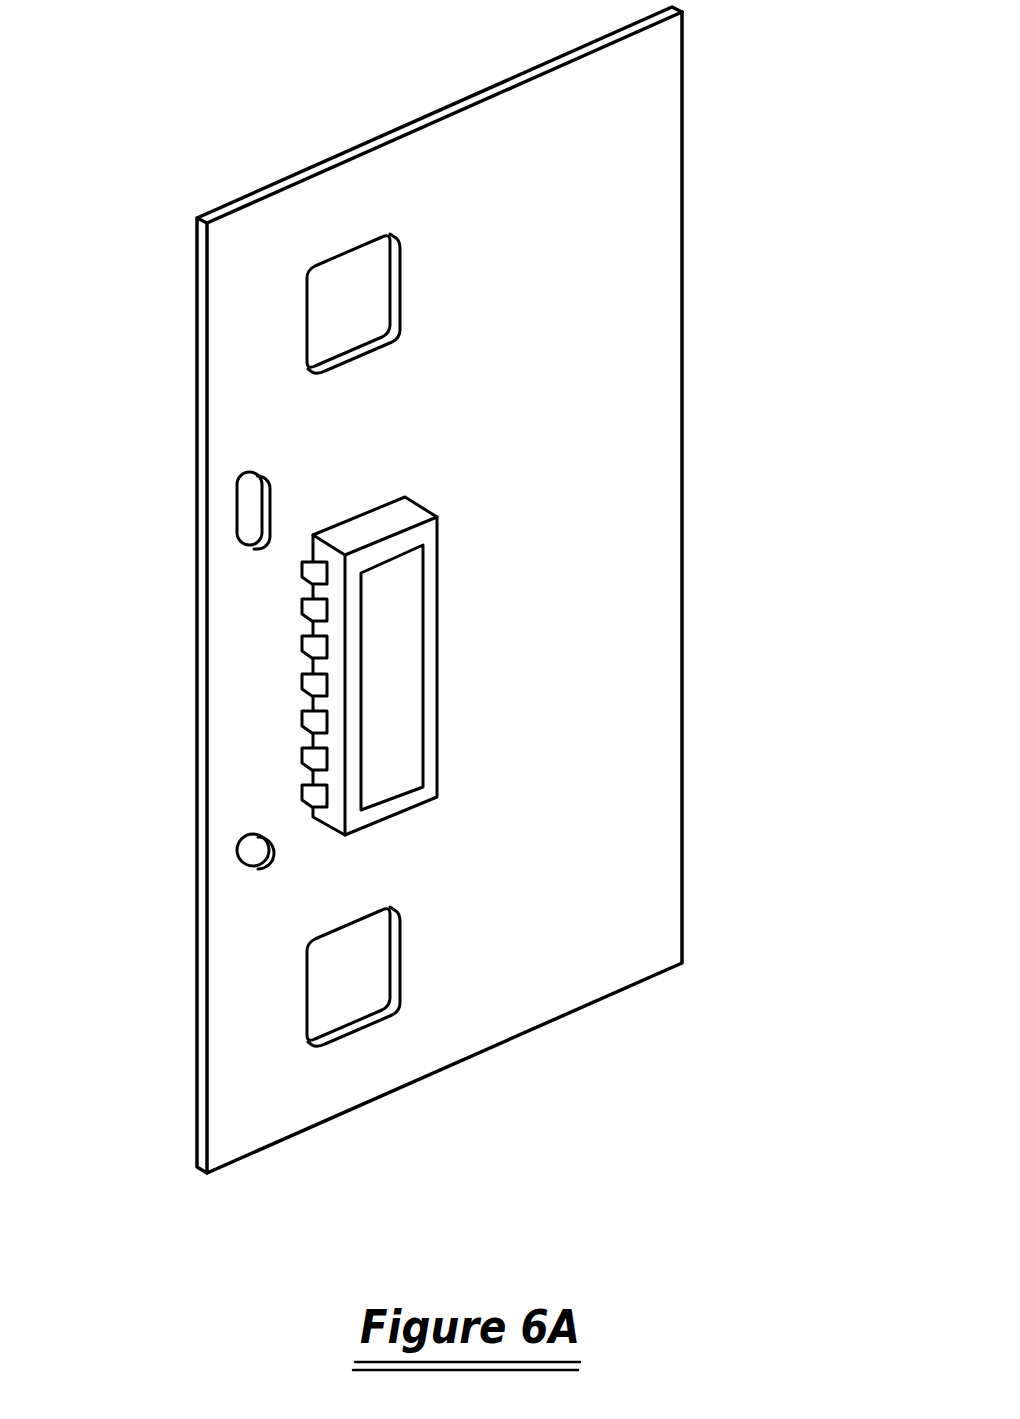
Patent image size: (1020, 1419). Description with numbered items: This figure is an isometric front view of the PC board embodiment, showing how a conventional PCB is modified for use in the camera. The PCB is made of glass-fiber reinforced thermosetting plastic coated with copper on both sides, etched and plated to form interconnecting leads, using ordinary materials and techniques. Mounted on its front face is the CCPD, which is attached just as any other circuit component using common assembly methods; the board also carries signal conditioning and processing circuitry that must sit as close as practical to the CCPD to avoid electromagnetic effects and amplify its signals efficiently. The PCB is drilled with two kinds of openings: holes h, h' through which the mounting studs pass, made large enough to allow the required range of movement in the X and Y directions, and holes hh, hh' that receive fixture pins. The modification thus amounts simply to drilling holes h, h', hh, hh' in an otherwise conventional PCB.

The PC board PCB is at (660, 662).
The hole h is at (409, 261).
The hole h' is at (412, 951).
The hole hh is at (161, 502).
The hole hh' is at (163, 879).
The element CCPD is at (438, 594).